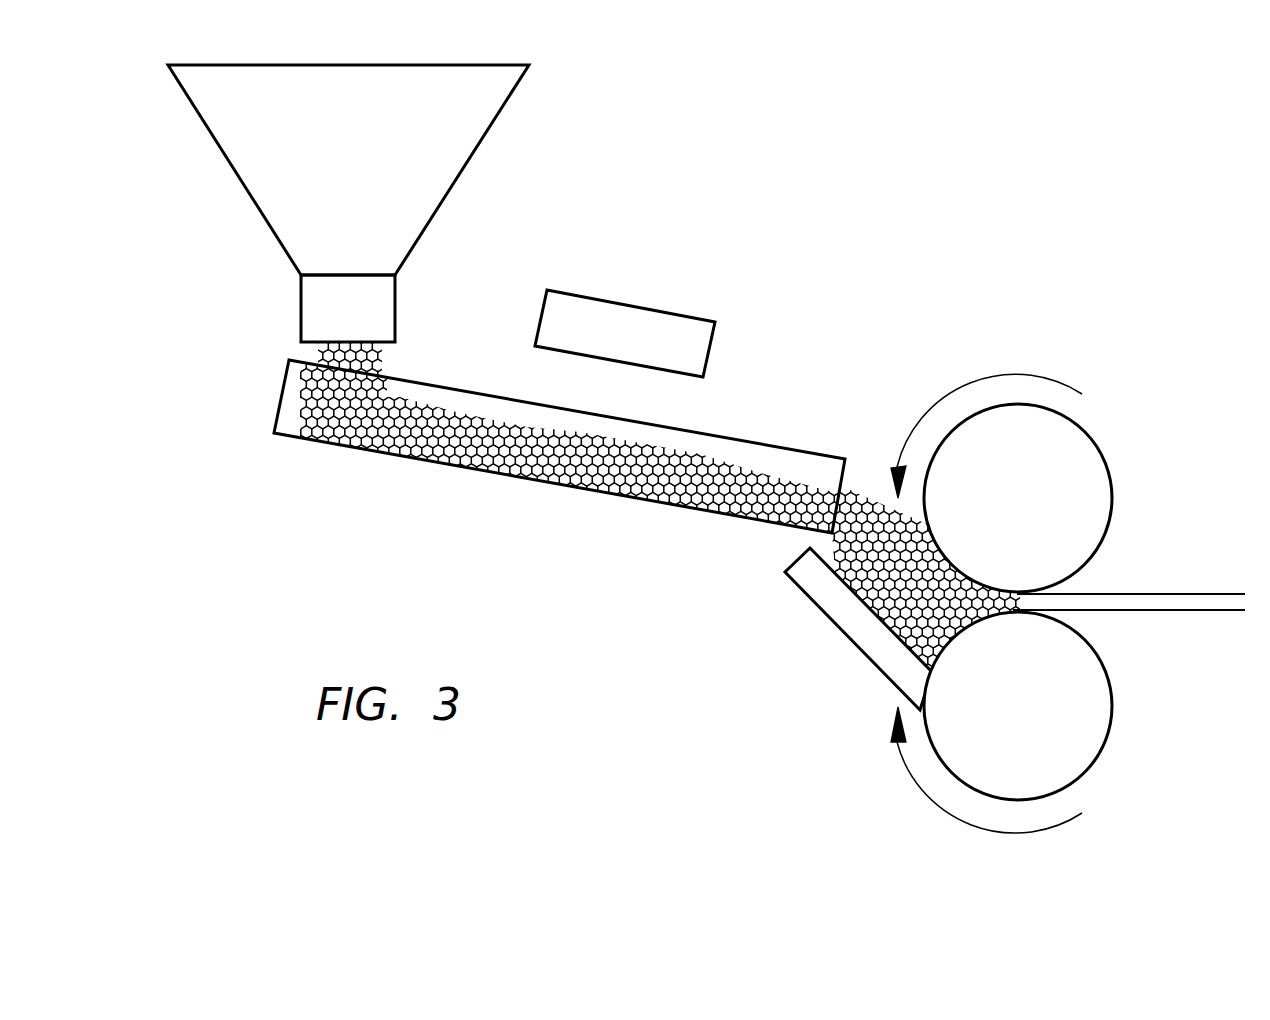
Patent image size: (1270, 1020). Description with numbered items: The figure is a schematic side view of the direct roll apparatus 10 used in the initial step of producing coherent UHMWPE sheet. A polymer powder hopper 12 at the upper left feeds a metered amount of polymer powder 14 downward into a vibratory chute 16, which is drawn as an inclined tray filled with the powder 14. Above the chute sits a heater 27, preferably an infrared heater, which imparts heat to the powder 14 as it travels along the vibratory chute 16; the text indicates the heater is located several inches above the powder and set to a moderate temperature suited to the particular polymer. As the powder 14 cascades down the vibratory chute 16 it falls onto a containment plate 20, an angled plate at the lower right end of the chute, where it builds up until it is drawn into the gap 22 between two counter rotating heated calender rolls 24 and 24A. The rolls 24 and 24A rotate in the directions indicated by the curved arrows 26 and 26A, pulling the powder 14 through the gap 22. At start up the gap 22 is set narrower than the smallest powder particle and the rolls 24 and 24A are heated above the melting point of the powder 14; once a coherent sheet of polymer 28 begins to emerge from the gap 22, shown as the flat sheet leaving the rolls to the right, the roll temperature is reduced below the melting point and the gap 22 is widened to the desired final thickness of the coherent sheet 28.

The direct roll apparatus 10 is at (760, 250).
The polymer powder hopper 12 is at (468, 123).
The polymer powder 14 is at (443, 420).
The vibratory chute 16 is at (288, 427).
The containment plate 20 is at (842, 610).
The gap 22 is at (1077, 594).
The heated calender roll 24 is at (1036, 513).
The heated calender roll 24A is at (1044, 720).
The arrow 26 is at (958, 394).
The arrow 26A is at (1008, 833).
The heater 27 is at (625, 318).
The coherent sheet of polymer 28 is at (1157, 612).